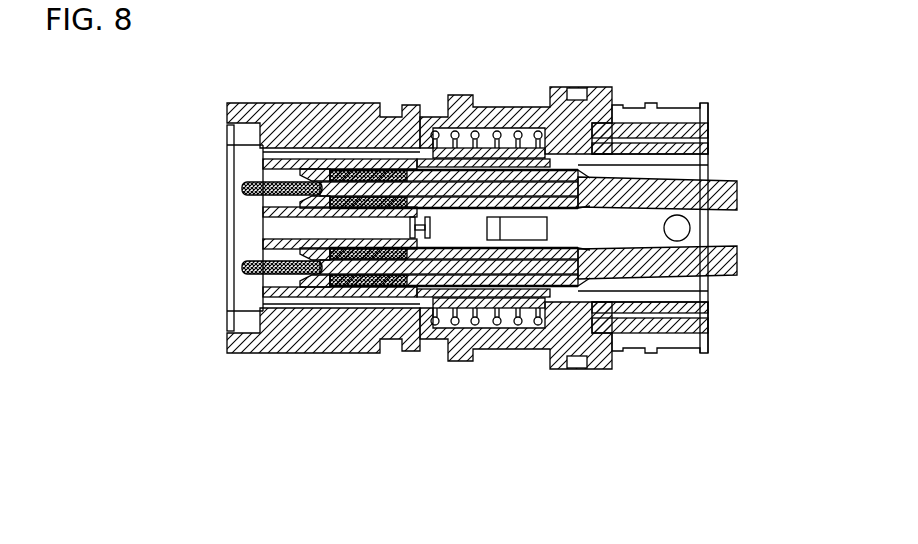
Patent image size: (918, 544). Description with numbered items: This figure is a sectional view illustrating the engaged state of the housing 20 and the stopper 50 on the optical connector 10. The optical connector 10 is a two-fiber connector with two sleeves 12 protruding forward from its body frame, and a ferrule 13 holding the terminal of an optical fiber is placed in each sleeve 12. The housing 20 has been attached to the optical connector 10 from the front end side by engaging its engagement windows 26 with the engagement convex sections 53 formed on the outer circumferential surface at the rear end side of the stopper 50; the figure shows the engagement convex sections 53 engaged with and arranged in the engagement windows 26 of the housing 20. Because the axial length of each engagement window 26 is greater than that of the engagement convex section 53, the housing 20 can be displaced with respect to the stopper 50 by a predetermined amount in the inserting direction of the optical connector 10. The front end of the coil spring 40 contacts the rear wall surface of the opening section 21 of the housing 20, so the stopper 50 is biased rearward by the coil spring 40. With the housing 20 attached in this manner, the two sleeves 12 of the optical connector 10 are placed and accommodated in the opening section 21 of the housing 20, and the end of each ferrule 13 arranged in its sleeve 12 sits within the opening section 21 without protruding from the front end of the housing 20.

The optical connector 10 is at (412, 132).
The sleeve 12 is at (290, 152).
The ferrule 13 is at (253, 262).
The housing 20 is at (343, 102).
The opening section 21 is at (263, 305).
The engagement window 26 is at (666, 108).
The coil spring 40 is at (495, 137).
The stopper 50 is at (575, 366).
The engagement convex section 53 is at (690, 108).